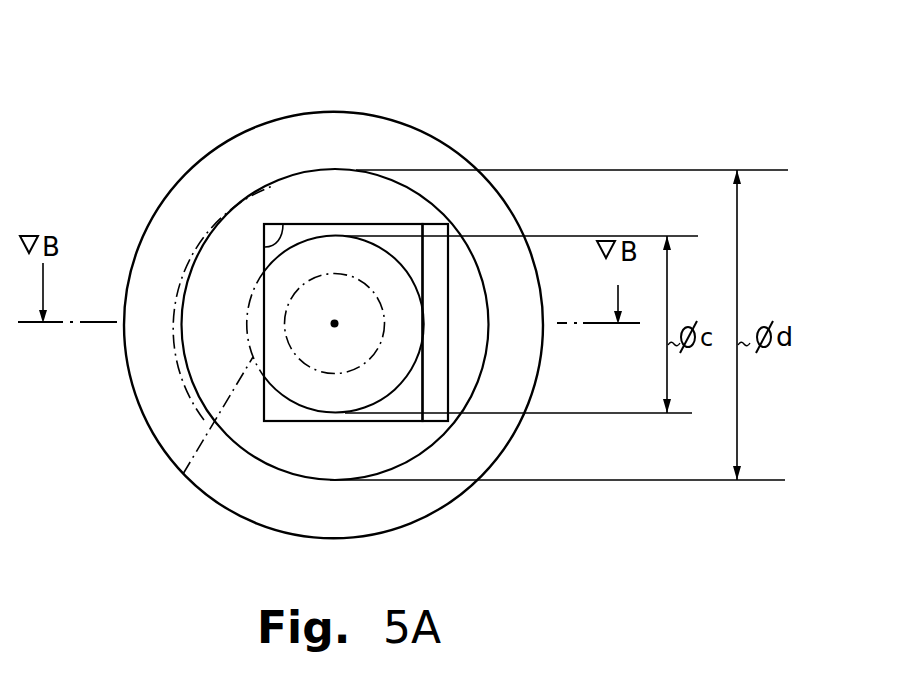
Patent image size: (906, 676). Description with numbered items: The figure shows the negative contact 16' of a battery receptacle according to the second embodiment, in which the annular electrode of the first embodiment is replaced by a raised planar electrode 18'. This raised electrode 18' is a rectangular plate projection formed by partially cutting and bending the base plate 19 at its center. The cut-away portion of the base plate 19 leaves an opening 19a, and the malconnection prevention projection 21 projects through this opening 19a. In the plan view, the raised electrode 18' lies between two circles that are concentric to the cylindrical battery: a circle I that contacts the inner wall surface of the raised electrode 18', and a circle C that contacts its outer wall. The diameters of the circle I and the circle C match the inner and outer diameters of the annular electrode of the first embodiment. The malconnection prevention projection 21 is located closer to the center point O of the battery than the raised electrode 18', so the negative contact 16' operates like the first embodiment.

The negative contact 16' is at (333, 274).
The base plate 19 is at (283, 134).
The opening 19a is at (282, 224).
The raised electrode 18' is at (513, 322).
The malconnection prevention projection 21 is at (320, 364).
The circle C is at (355, 170).
The center point O is at (334, 324).
The circle I is at (183, 473).